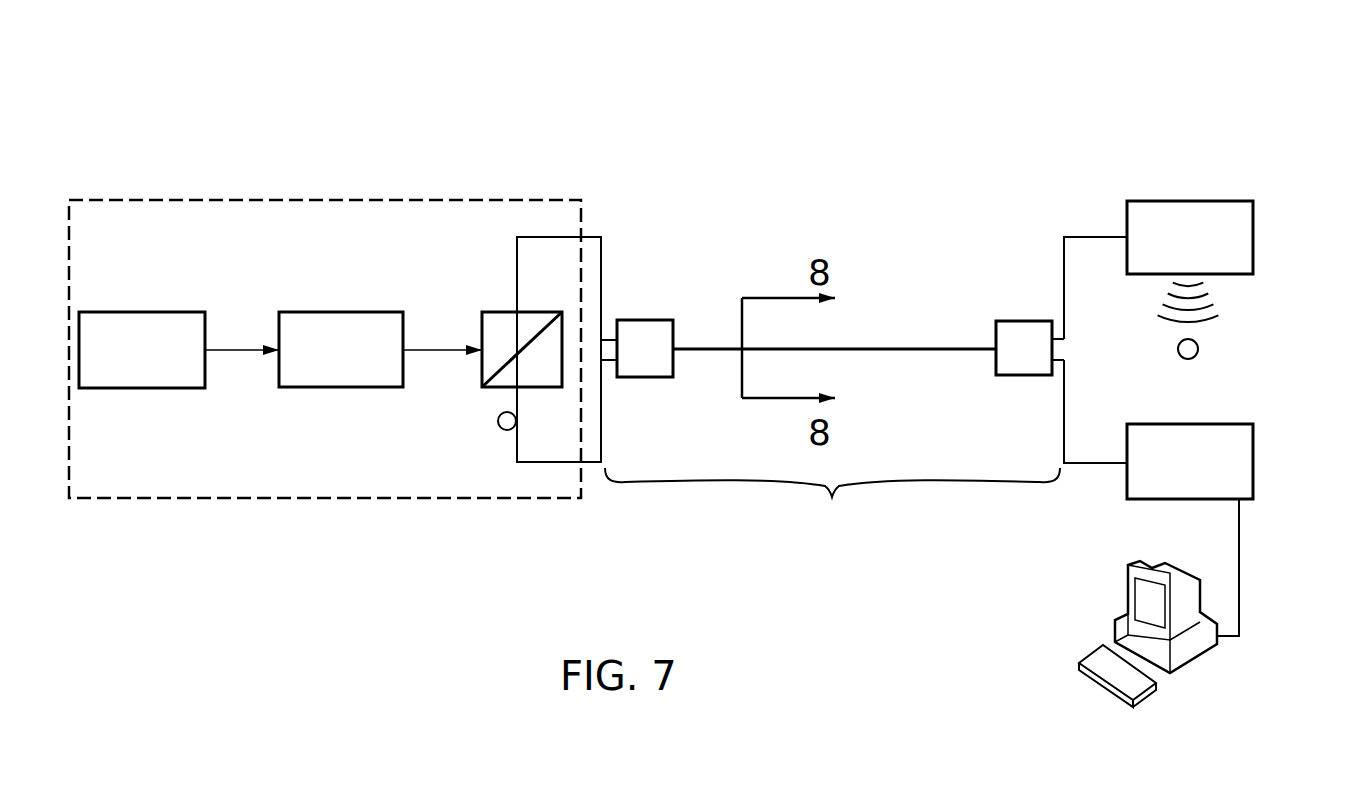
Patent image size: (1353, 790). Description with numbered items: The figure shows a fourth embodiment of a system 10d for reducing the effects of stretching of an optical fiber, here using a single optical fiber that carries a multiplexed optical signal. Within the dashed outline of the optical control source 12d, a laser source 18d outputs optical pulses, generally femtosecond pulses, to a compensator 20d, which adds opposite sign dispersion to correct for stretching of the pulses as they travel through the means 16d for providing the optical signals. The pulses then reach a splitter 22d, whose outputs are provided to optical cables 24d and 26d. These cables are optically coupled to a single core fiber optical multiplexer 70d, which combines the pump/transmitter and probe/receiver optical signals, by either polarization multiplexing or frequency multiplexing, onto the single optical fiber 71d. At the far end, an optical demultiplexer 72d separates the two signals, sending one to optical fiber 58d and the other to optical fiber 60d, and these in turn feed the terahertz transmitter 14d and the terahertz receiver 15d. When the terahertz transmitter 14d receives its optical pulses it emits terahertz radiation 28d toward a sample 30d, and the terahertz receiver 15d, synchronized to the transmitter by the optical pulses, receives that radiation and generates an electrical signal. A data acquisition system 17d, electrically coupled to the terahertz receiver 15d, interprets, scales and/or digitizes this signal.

The system 10d is at (908, 88).
The optical control source 12d is at (408, 200).
The terahertz transmitter 14d is at (1236, 201).
The terahertz receiver 15d is at (1190, 424).
The means for providing optical signals 16d is at (832, 497).
The data acquisition system 17d is at (1191, 574).
The laser source 18d is at (110, 312).
The compensator 20d is at (305, 312).
The splitter 22d is at (483, 368).
The optical cable 24d is at (532, 237).
The optical cable 26d is at (552, 462).
The terahertz radiation 28d is at (1220, 304).
The sample 30d is at (1191, 359).
The optical fiber 58d is at (1092, 237).
The optical fiber 60d is at (1101, 464).
The single core fiber optical multiplexer 70d is at (648, 320).
The optical fiber 71d is at (870, 349).
The optical demultiplexer 72d is at (1018, 321).